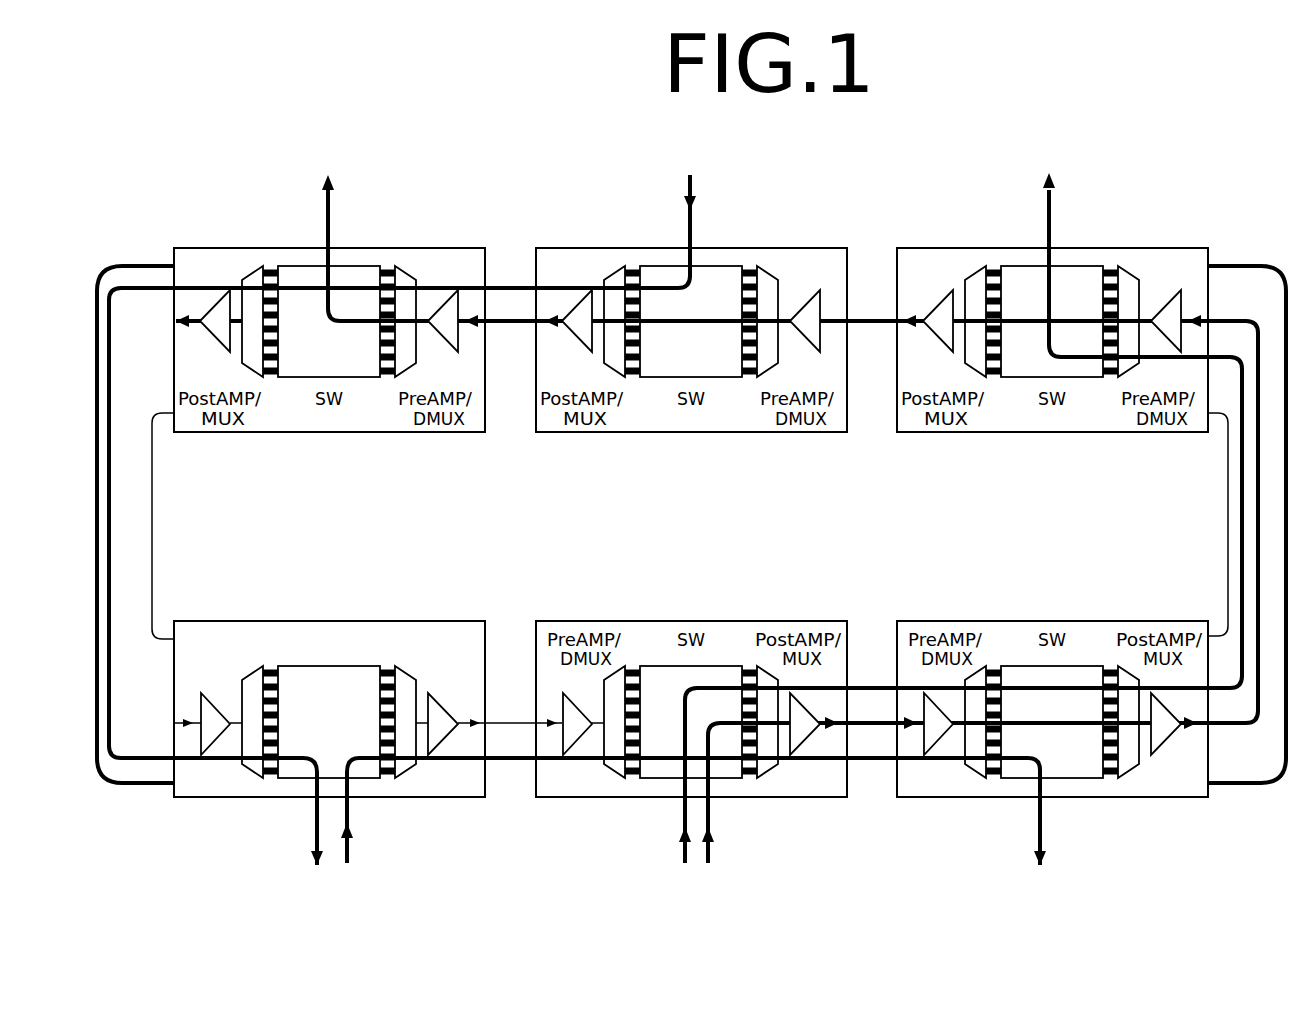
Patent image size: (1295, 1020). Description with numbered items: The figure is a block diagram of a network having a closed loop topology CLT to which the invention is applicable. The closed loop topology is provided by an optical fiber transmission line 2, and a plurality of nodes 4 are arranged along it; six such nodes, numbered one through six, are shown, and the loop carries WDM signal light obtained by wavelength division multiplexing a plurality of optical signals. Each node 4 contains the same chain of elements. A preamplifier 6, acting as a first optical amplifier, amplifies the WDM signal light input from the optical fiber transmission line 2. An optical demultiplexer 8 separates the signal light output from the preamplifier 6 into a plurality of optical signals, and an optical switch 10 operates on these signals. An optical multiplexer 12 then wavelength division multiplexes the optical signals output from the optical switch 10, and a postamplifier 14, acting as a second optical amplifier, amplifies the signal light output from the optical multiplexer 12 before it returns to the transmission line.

The optical fiber transmission line 2 is at (1294, 540).
The node 4 is at (691, 554).
The preamplifier 6 is at (218, 737).
The optical demultiplexer 8 is at (252, 773).
The optical switch 10 is at (352, 683).
The optical multiplexer 12 is at (407, 772).
The postamplifier 14 is at (447, 742).